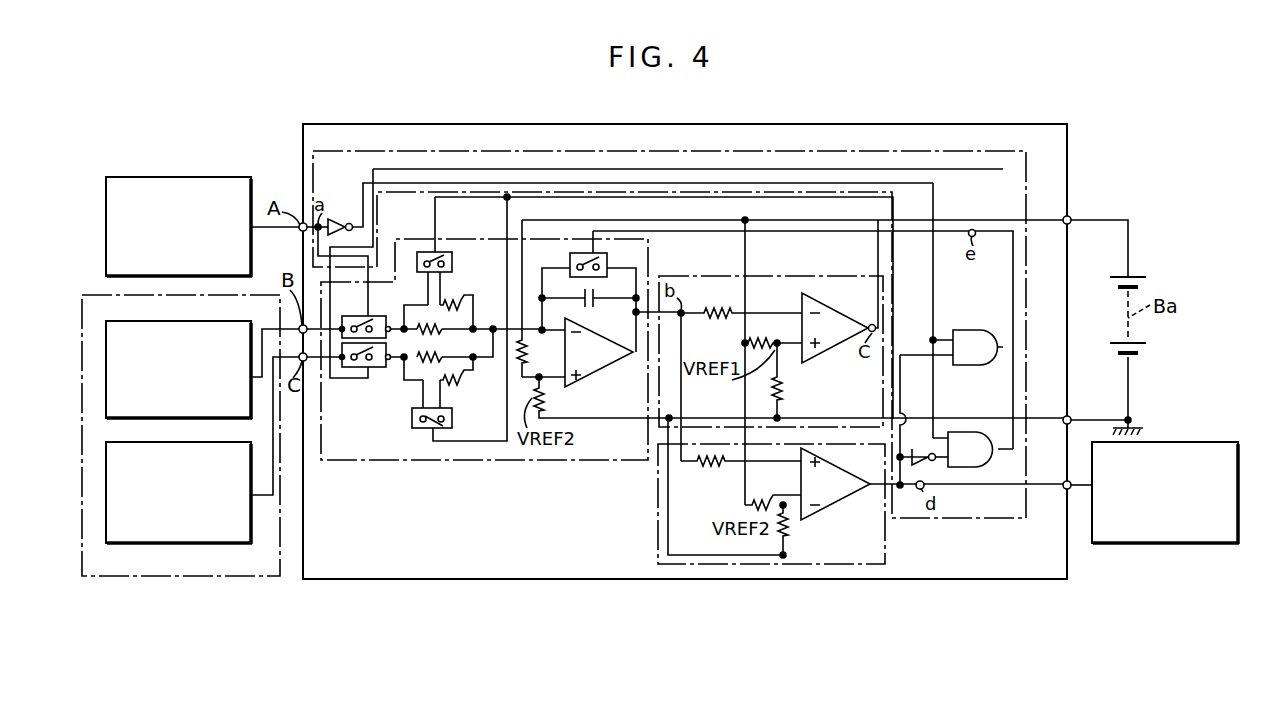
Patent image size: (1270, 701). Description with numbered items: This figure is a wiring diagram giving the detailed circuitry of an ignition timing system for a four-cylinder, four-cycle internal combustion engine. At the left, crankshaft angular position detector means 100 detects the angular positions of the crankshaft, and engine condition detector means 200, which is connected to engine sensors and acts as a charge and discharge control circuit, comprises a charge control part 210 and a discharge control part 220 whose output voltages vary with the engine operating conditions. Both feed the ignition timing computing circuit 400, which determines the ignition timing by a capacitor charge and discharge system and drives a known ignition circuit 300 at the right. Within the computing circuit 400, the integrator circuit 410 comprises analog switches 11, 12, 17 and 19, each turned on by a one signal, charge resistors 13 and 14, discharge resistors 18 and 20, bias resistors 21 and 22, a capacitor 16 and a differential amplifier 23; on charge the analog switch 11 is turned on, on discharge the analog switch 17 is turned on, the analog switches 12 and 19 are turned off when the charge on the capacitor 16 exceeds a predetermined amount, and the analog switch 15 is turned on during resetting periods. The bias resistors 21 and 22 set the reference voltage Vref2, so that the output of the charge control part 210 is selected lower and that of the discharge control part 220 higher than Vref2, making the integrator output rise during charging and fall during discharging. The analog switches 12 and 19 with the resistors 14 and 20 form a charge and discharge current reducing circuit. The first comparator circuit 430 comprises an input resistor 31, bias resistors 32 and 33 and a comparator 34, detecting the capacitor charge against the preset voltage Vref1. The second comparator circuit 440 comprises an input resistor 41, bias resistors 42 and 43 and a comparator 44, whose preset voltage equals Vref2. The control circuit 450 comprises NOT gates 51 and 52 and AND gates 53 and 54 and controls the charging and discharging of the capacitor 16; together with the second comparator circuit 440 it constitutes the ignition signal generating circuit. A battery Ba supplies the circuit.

The crankshaft angular position detector means 100 is at (193, 177).
The engine condition detector means 200 is at (145, 577).
The charge control part 210 is at (106, 352).
The discharge control part 220 is at (106, 473).
The ignition circuit 300 is at (1172, 442).
The ignition timing computing circuit 400 is at (922, 580).
The integrator circuit 410 is at (605, 461).
The first comparator circuit 430 is at (845, 276).
The second comparator circuit 440 is at (657, 482).
The control circuit 450 is at (1010, 518).
The analog switch 11 is at (378, 309).
The analog switch 12 is at (452, 260).
The charge resistor 13 is at (426, 326).
The charge resistor 14 is at (460, 305).
The analog switch 15 is at (607, 257).
The capacitor 16 is at (590, 310).
The analog switch 17 is at (372, 367).
The discharge resistor 18 is at (435, 356).
The analog switch 19 is at (412, 418).
The discharge resistor 20 is at (462, 386).
The bias resistor 21 is at (524, 348).
The bias resistor 22 is at (546, 404).
The differential amplifier 23 is at (600, 366).
The input resistor 31 is at (722, 317).
The bias resistor 32 is at (760, 343).
The bias resistor 33 is at (785, 390).
The comparator 34 is at (830, 320).
The input resistor 41 is at (720, 466).
The bias resistor 42 is at (760, 500).
The bias resistor 43 is at (790, 542).
The comparator 44 is at (846, 452).
The NOT gate 51 is at (338, 218).
The NOT gate 52 is at (922, 448).
The AND gate 53 is at (970, 432).
The AND gate 54 is at (975, 320).